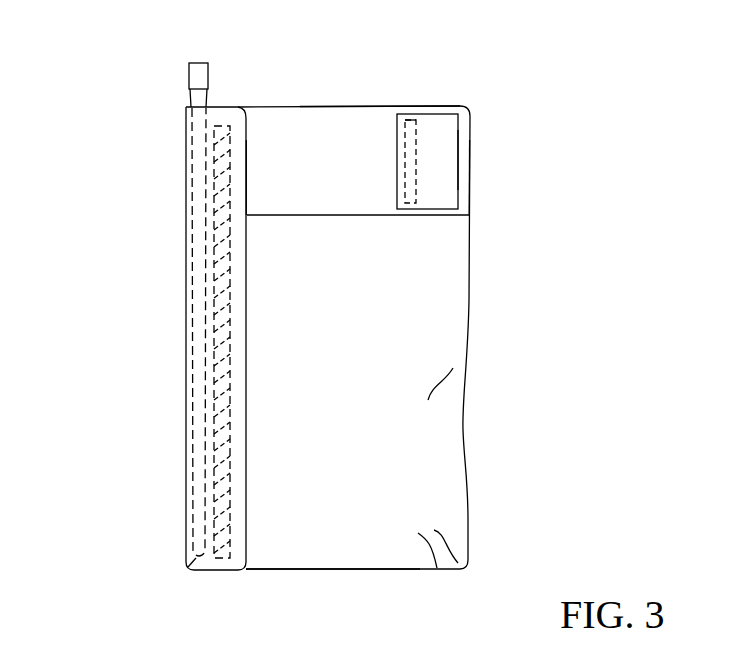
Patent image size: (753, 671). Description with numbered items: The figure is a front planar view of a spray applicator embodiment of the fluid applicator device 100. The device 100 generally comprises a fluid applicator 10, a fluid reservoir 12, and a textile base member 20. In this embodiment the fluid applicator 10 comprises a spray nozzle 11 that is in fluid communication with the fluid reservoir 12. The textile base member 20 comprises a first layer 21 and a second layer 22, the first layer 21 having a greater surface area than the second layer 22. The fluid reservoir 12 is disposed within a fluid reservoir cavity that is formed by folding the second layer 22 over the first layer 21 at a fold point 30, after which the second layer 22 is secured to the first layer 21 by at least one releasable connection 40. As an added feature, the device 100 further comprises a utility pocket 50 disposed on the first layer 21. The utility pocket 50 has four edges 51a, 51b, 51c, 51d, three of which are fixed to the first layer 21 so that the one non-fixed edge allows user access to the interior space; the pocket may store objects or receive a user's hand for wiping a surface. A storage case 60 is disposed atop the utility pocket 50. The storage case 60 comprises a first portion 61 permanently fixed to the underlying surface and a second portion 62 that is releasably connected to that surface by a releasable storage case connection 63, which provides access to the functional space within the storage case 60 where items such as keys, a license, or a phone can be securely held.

The fluid applicator device 100 is at (570, 97).
The fluid applicator 10 is at (147, 83).
The spray nozzle 11 is at (206, 71).
The fluid reservoir 12 is at (200, 348).
The textile base member 20 is at (443, 433).
The first layer 21 is at (288, 548).
The second layer 22 is at (187, 570).
The fold point 30 is at (186, 447).
The releasable connection 40 is at (218, 125).
The utility pocket 50 is at (336, 125).
The edge of utility pocket 51a is at (402, 105).
The edge of utility pocket 51b is at (472, 203).
The edge of utility pocket 51c is at (443, 217).
The edge of utility pocket 51d is at (246, 137).
The storage case 60 is at (440, 135).
The first portion 61 is at (460, 140).
The second portion 62 is at (398, 168).
The releasable storage case connection 63 is at (407, 124).